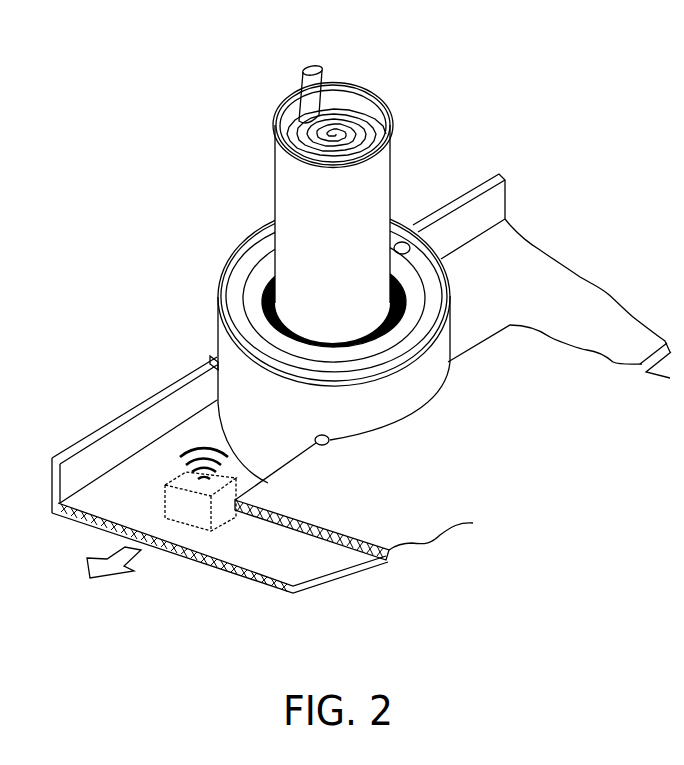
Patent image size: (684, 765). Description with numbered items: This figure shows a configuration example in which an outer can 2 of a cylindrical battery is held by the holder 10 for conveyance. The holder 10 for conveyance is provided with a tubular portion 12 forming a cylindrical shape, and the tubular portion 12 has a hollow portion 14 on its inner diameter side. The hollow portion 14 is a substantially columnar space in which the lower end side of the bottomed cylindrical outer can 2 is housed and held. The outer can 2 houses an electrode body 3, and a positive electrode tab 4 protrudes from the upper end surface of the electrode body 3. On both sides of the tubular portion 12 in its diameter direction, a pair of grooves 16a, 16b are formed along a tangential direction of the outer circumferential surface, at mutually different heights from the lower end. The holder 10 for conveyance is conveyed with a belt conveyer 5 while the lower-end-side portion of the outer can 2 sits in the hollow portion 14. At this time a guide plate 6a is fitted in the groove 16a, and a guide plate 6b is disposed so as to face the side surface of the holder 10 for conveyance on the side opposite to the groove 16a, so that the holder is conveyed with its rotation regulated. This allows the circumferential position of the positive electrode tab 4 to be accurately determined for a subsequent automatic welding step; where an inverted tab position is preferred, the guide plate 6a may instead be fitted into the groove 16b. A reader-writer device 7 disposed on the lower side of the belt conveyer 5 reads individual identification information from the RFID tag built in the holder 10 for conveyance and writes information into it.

The outer can 2 is at (291, 92).
The electrode body 3 is at (356, 111).
The positive electrode tab 4 is at (314, 68).
The belt conveyer 5 is at (310, 561).
The guide plate 6a is at (265, 516).
The guide plate 6b is at (80, 437).
The reader-writer device 7 is at (185, 562).
The holder for conveyance 10 is at (194, 208).
The tubular portion 12 is at (243, 240).
The hollow portion 14 is at (256, 277).
The groove 16a is at (329, 444).
The groove 16b is at (215, 358).